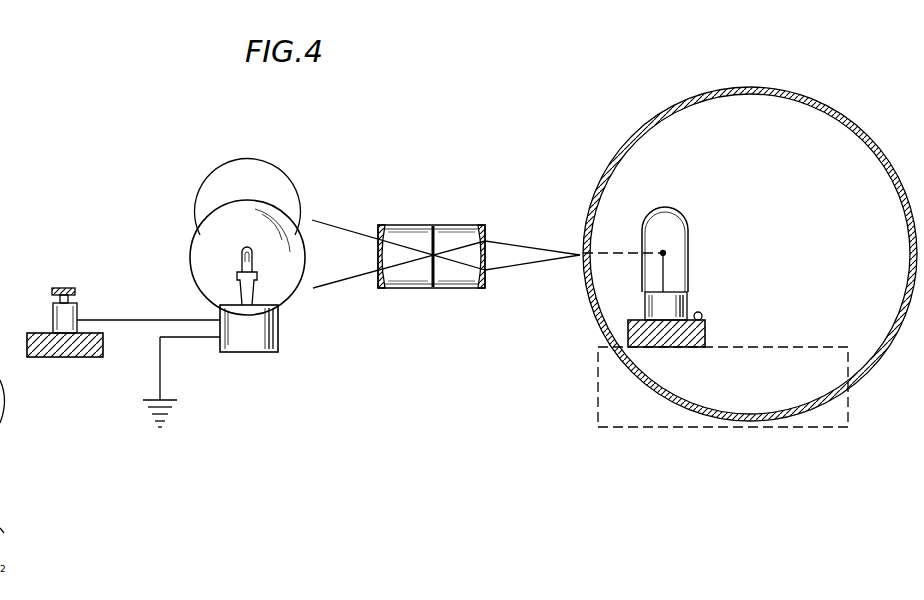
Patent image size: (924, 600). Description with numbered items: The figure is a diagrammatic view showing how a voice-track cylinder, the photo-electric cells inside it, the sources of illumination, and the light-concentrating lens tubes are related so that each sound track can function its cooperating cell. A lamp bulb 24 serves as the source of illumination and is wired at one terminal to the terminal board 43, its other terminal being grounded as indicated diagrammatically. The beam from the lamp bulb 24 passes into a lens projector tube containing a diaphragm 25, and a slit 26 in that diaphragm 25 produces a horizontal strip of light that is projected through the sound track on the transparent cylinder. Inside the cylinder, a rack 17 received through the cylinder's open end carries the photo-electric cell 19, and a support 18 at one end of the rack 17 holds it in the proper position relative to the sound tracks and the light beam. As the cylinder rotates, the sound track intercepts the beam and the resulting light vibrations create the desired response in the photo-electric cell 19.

The rack 17 is at (705, 331).
The support 18 is at (848, 424).
The photo-electric cell 19 is at (672, 217).
The lamp bulb 24 is at (199, 228).
The diaphragm 25 is at (437, 232).
The slit 26 is at (435, 253).
The terminal board 43 is at (36, 333).